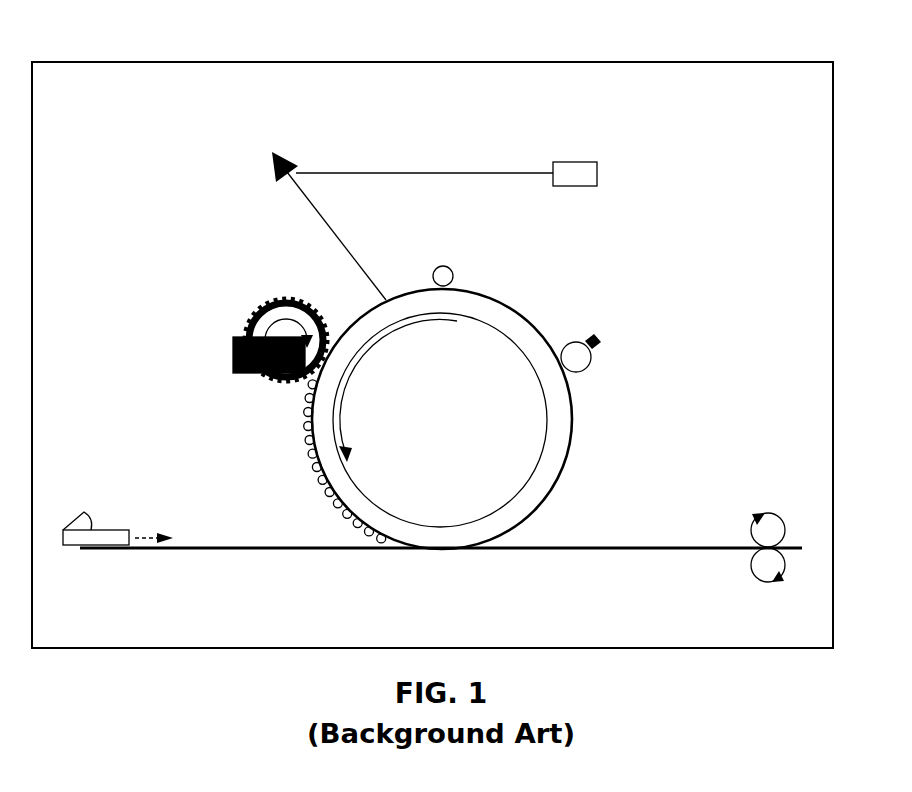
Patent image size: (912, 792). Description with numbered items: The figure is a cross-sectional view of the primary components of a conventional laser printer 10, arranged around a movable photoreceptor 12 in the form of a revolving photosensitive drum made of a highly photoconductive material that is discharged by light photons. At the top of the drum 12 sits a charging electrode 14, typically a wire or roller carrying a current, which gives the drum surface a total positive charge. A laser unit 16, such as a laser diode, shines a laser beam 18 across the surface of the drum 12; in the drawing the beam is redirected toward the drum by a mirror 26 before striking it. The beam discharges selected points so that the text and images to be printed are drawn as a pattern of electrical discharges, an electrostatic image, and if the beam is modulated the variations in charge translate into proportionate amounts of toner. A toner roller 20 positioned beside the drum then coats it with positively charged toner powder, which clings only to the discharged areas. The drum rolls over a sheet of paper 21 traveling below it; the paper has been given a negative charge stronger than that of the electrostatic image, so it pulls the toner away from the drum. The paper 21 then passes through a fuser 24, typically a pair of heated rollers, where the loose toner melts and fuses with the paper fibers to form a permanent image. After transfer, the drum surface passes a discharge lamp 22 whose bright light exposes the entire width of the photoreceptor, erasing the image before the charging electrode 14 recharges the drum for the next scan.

The laser printer 10 is at (333, 62).
The photoreceptor drum 12 is at (508, 483).
The charging electrode 14 is at (449, 265).
The laser unit 16 is at (572, 160).
The laser beam 18 is at (441, 172).
The toner roller 20 is at (262, 312).
The sheet of paper 21 is at (88, 522).
The discharge lamp 22 is at (584, 370).
The fuser 24 is at (763, 535).
The mirror 26 is at (254, 155).